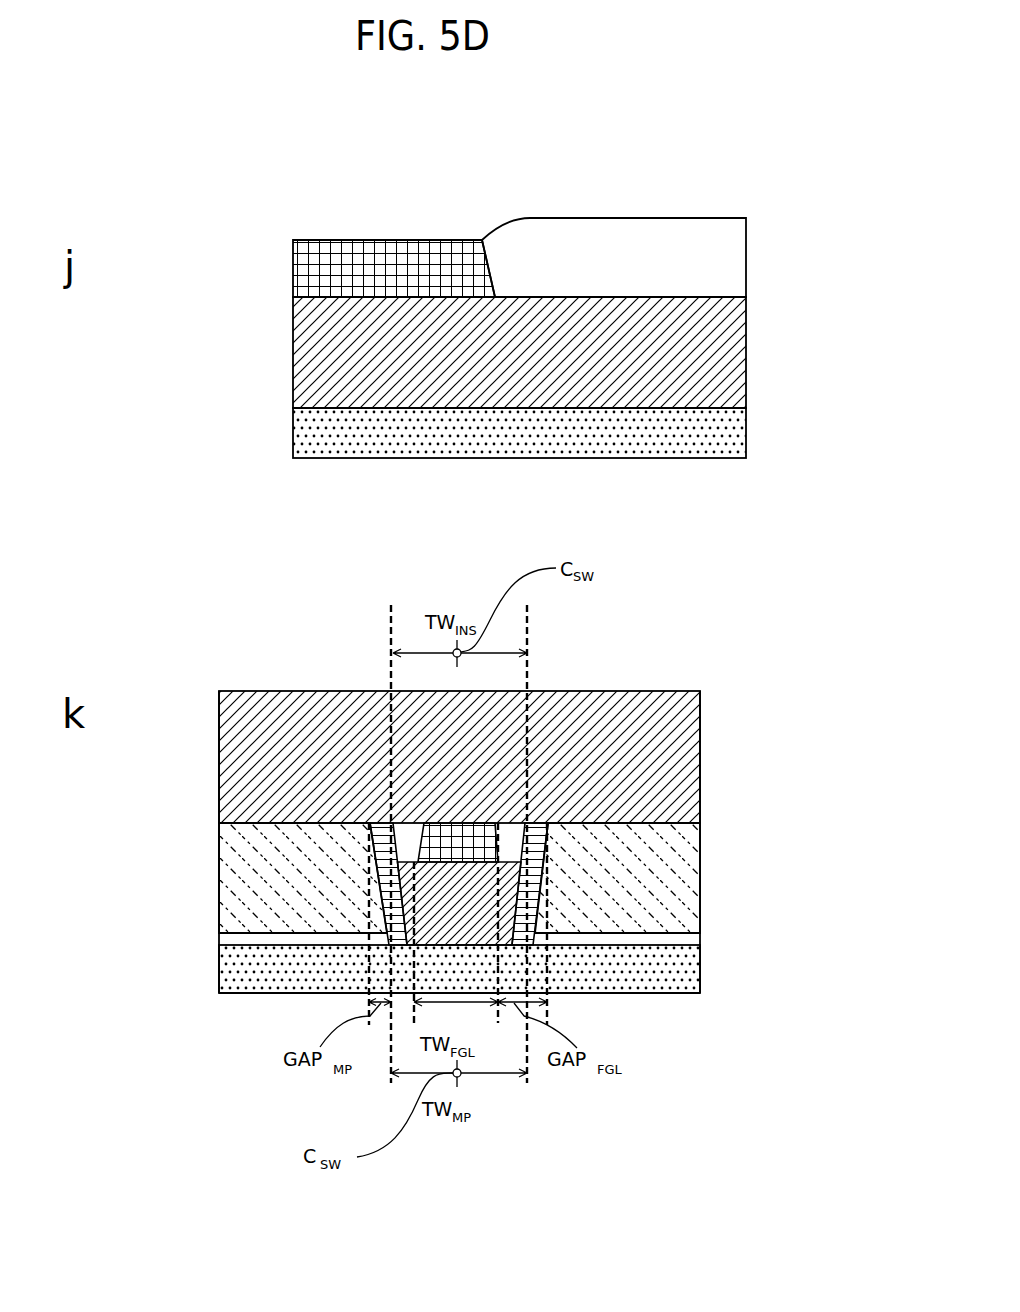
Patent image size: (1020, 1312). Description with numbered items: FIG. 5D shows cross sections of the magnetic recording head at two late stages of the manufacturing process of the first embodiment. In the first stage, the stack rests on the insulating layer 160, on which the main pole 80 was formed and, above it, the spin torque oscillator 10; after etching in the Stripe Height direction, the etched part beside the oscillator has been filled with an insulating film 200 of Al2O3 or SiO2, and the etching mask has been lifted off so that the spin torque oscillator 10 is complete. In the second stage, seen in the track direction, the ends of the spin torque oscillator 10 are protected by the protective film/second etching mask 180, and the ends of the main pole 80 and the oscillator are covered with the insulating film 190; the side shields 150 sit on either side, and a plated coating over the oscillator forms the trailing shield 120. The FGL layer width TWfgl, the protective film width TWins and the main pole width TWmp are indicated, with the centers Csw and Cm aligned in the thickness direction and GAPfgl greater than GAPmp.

The spin torque oscillator 10 is at (305, 264).
The main pole 80 is at (305, 356).
The trailing shield 120 is at (232, 727).
The side shield 150 is at (688, 850).
The insulating layer 160 is at (305, 431).
The protective film/second etching mask 180 is at (513, 832).
The insulating film 190 is at (385, 833).
The insulating film 200 is at (611, 238).